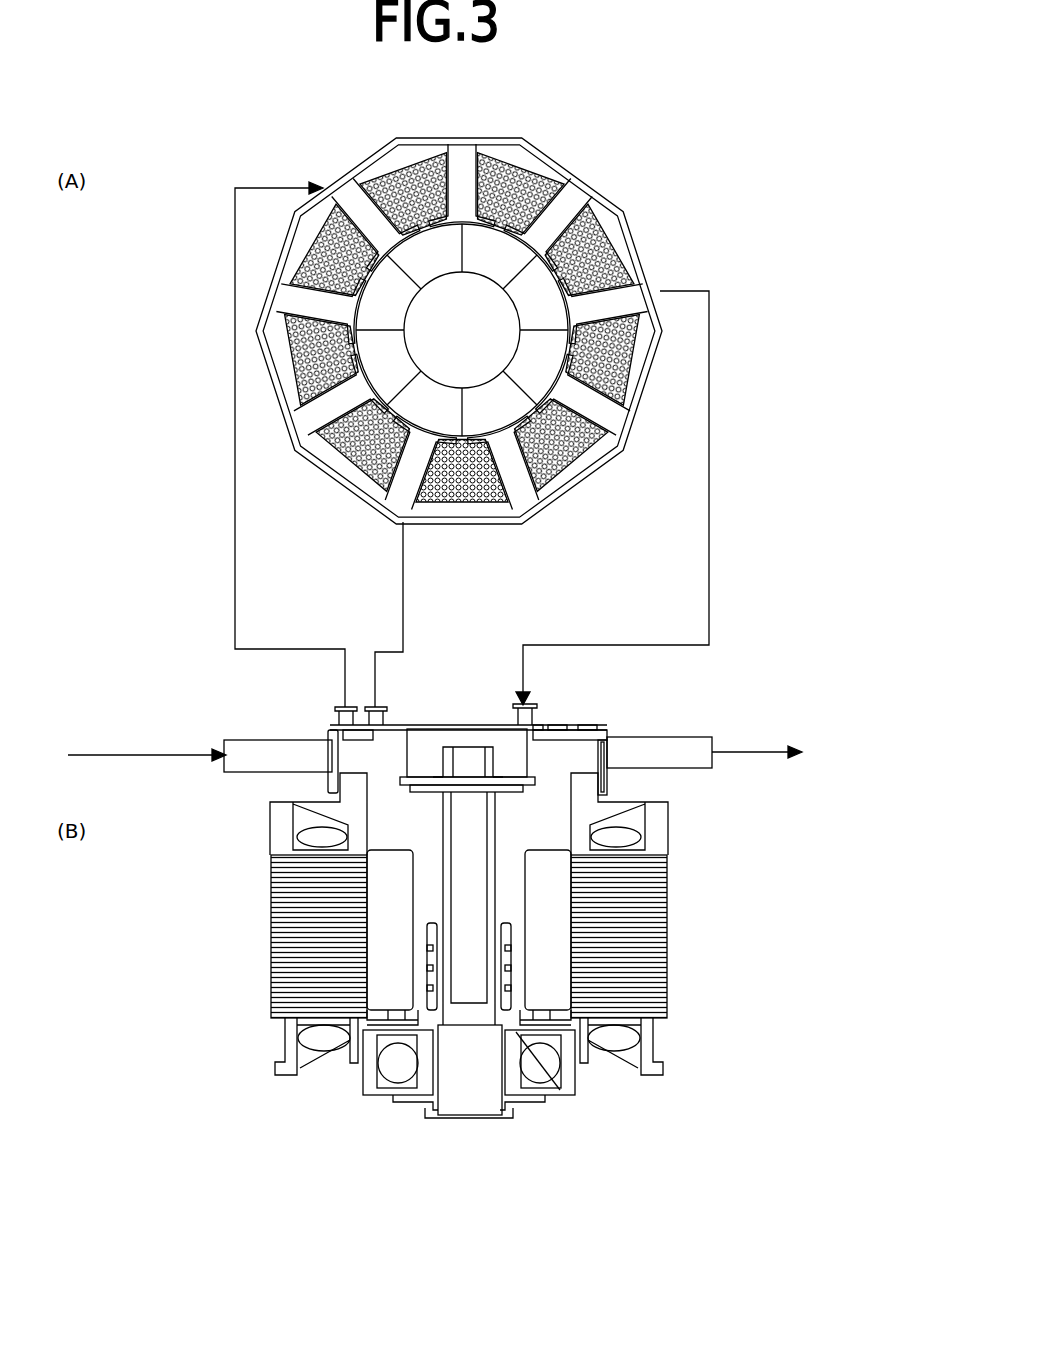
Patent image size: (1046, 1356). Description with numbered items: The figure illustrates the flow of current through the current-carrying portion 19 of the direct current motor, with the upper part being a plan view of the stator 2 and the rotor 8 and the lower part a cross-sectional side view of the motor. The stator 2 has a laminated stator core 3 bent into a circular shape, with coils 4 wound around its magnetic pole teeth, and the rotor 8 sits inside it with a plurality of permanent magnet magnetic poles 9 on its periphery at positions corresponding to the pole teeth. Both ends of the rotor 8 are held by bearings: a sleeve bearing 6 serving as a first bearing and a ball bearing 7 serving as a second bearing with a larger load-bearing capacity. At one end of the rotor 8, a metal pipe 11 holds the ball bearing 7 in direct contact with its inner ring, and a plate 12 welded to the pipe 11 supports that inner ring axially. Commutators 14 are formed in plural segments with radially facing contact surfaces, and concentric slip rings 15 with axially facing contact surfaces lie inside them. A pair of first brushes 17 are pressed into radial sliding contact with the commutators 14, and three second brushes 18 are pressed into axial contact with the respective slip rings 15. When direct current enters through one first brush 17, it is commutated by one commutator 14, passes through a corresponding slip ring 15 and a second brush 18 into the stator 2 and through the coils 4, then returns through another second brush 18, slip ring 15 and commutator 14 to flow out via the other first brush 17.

The stator 2 is at (492, 520).
The stator core 3 is at (617, 443).
The coils 4 is at (545, 468).
The sleeve bearing 6 is at (423, 777).
The ball bearing 7 is at (600, 1047).
The rotor 8 is at (472, 316).
The permanent magnet magnetic poles 9 is at (553, 962).
The pipe 11 is at (412, 1035).
The plate 12 is at (533, 1097).
The commutators 14 is at (610, 783).
The slip rings 15 is at (533, 730).
The first brushes 17 is at (273, 757).
The second brushes 18 is at (337, 716).
The current-carrying portion 19 is at (776, 656).